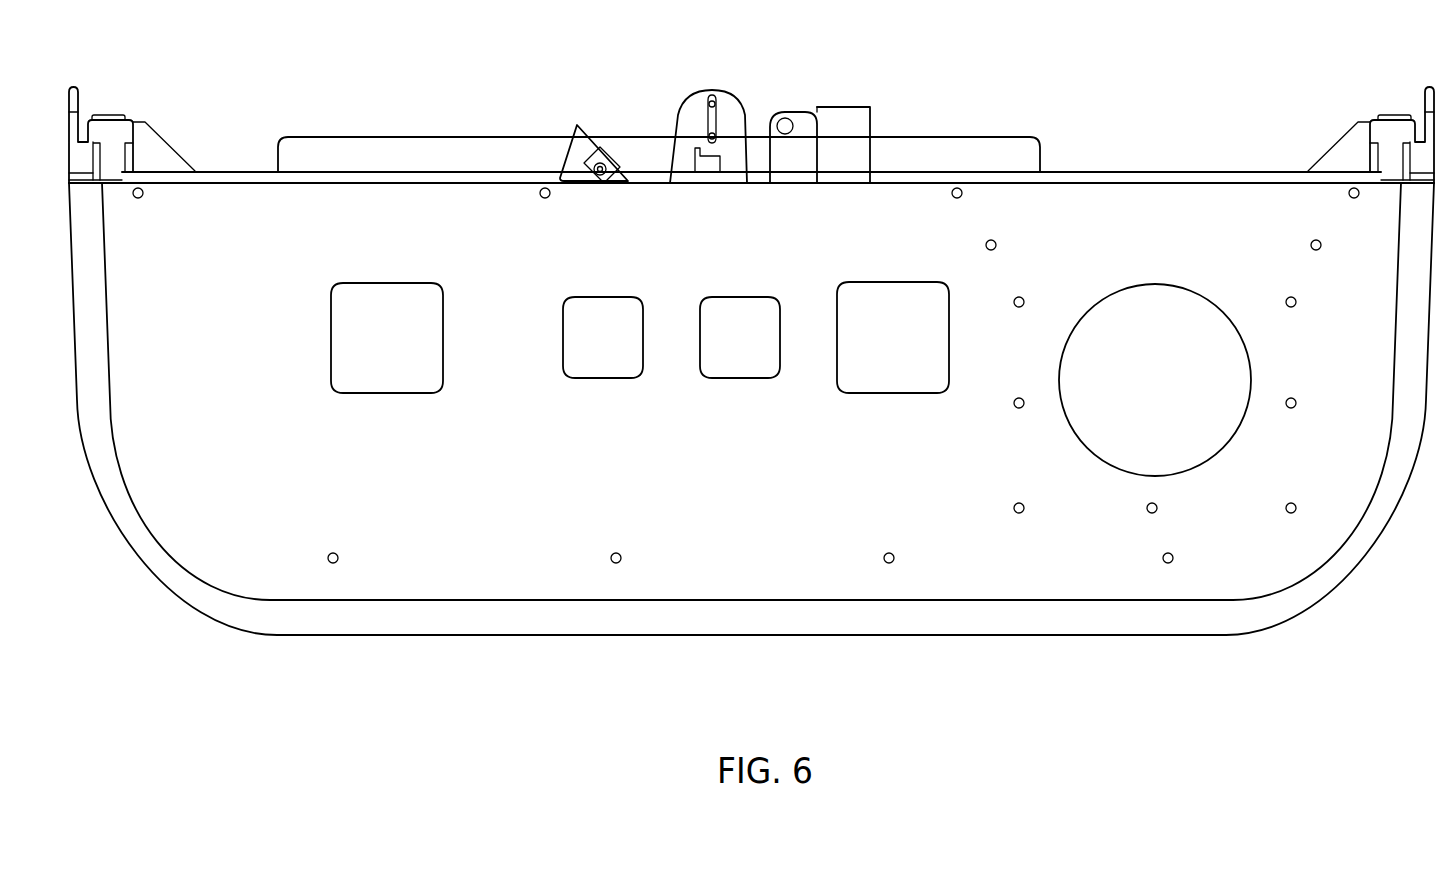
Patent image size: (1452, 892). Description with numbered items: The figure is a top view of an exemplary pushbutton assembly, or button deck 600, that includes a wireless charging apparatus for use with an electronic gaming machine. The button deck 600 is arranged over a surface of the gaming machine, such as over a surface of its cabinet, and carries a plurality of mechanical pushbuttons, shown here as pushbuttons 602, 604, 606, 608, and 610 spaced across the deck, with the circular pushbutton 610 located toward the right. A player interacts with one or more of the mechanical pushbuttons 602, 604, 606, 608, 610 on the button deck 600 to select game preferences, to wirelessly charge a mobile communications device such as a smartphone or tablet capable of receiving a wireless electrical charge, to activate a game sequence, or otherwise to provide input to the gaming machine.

The button deck 600 is at (1083, 181).
The pushbutton 602 is at (387, 283).
The pushbutton 604 is at (605, 297).
The pushbutton 606 is at (742, 297).
The pushbutton 608 is at (890, 282).
The pushbutton 610 is at (1180, 327).